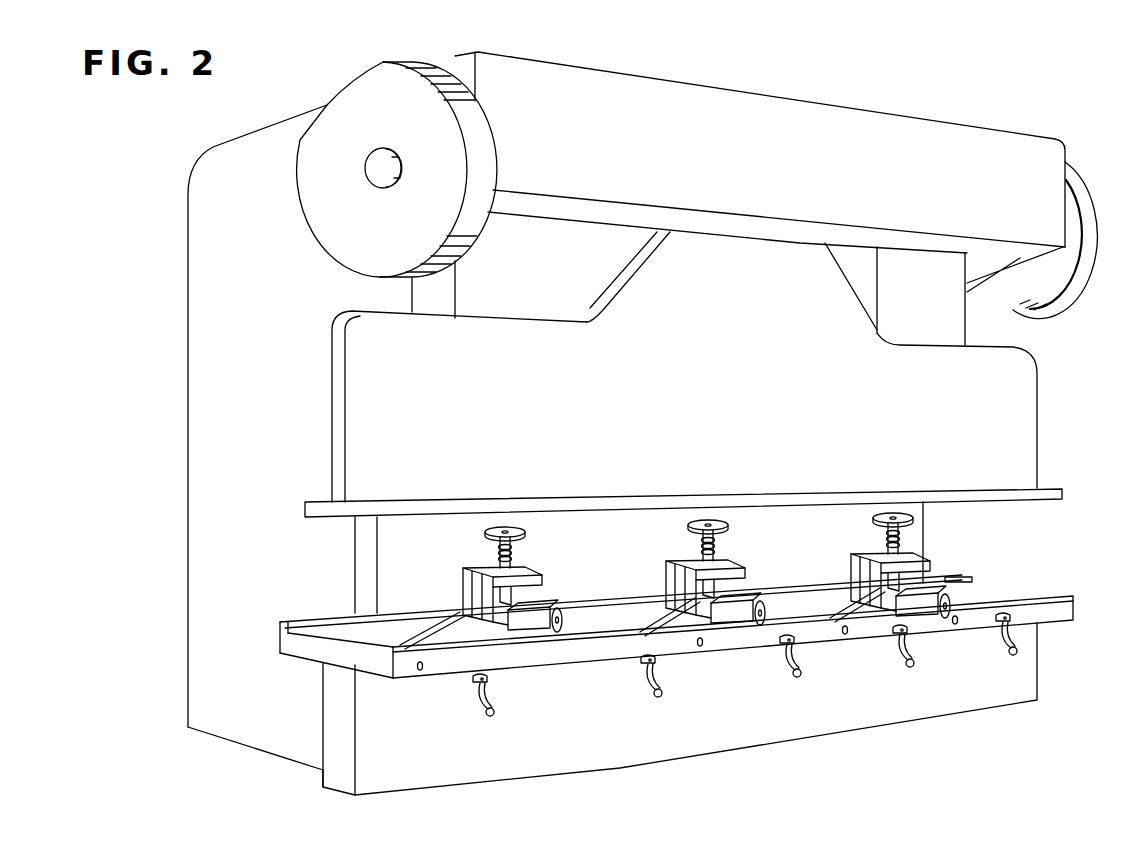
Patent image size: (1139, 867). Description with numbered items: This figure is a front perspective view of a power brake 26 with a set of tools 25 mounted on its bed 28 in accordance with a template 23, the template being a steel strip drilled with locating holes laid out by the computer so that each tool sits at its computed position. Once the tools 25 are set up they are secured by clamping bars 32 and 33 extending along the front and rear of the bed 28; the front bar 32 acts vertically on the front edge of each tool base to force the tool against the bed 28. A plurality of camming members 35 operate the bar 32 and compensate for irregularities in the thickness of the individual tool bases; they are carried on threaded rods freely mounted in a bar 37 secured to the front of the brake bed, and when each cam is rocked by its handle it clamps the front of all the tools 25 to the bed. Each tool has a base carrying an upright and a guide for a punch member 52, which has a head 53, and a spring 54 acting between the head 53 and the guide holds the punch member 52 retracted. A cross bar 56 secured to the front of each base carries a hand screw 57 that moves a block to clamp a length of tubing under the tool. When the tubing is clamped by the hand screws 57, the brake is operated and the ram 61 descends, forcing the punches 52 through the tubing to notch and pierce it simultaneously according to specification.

The template 23 is at (388, 655).
The tools 25 is at (556, 572).
The power brake 26 is at (804, 179).
The bed 28 is at (313, 652).
The clamping bar 32 is at (428, 643).
The clamping bar 33 is at (302, 618).
The camming members 35 is at (495, 690).
The bar 37 is at (437, 665).
The punch member 52 is at (513, 551).
The head 53 is at (526, 533).
The spring 54 is at (716, 549).
The cross bar 56 is at (532, 603).
The hand screw 57 is at (758, 597).
The ram 61 is at (692, 425).